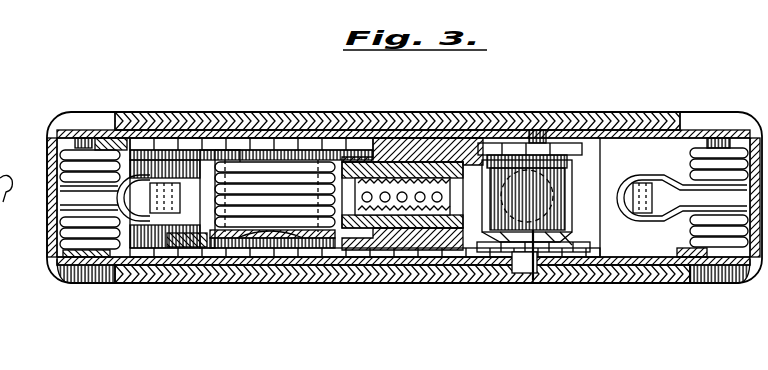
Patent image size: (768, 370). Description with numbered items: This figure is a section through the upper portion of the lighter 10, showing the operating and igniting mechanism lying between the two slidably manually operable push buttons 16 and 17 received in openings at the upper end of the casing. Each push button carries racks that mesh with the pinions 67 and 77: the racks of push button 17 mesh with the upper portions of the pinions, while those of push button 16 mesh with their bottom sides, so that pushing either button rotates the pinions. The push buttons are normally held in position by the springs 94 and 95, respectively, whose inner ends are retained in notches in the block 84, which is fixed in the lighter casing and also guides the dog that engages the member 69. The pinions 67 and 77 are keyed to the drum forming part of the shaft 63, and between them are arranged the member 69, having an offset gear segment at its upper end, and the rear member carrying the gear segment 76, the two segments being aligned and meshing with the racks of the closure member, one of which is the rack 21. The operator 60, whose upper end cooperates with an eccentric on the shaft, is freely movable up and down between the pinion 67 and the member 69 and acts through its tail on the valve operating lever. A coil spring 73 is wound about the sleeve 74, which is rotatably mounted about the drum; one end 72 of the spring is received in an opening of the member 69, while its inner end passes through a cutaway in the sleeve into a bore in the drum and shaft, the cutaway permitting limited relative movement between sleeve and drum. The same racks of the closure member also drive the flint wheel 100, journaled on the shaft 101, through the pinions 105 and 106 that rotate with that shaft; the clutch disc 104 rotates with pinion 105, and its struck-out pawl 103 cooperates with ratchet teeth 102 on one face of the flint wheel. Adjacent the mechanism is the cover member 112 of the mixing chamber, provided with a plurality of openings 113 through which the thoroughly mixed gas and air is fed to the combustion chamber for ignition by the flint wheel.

The lighter 10 is at (436, 106).
The push button 16 is at (737, 284).
The push button 17 is at (52, 252).
The rack 21 is at (4, 198).
The operator 60 is at (338, 250).
The shaft 63 is at (262, 130).
The pinion 67 is at (300, 240).
The member 69 is at (180, 215).
The end of coil spring 72 is at (225, 245).
The coil spring 73 is at (268, 213).
The sleeve 74 is at (228, 167).
The gear segment 76 is at (210, 150).
The pinion 77 is at (300, 140).
The block 84 is at (152, 250).
The spring 94 is at (733, 147).
The spring 95 is at (60, 160).
The flint wheel 100 is at (560, 197).
The shaft 101 is at (522, 236).
The ratchet teeth 102 is at (524, 260).
The pawl 103 is at (488, 226).
The clutch disc 104 is at (568, 246).
The pinion 105 is at (530, 284).
The pinion 106 is at (532, 135).
The cover member 112 is at (433, 177).
The openings 113 is at (437, 202).